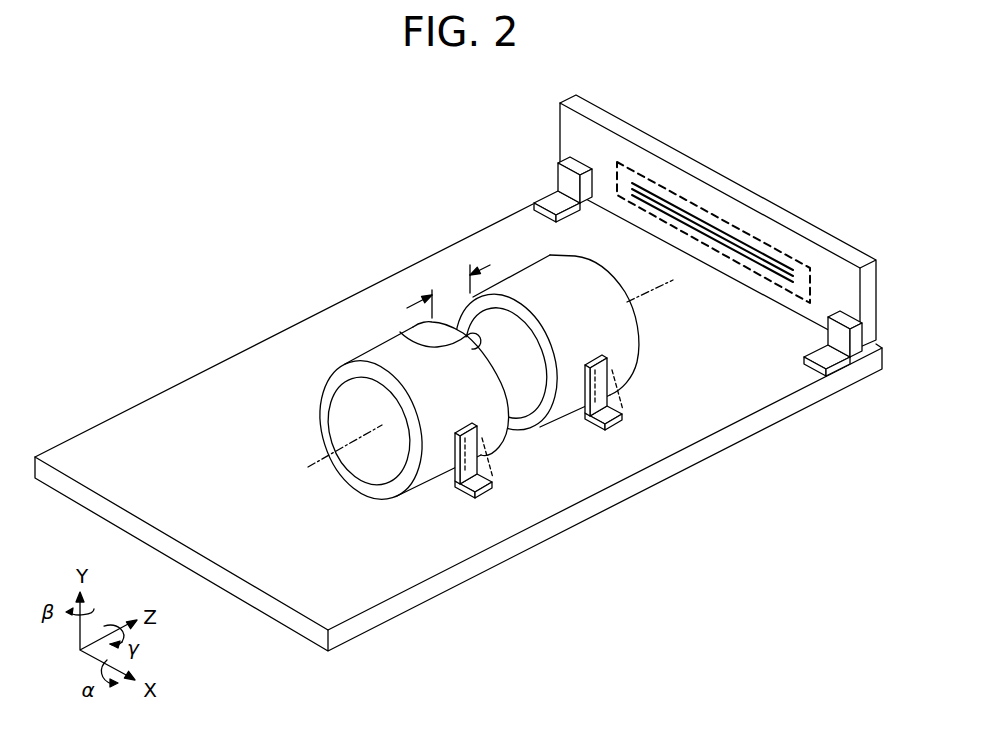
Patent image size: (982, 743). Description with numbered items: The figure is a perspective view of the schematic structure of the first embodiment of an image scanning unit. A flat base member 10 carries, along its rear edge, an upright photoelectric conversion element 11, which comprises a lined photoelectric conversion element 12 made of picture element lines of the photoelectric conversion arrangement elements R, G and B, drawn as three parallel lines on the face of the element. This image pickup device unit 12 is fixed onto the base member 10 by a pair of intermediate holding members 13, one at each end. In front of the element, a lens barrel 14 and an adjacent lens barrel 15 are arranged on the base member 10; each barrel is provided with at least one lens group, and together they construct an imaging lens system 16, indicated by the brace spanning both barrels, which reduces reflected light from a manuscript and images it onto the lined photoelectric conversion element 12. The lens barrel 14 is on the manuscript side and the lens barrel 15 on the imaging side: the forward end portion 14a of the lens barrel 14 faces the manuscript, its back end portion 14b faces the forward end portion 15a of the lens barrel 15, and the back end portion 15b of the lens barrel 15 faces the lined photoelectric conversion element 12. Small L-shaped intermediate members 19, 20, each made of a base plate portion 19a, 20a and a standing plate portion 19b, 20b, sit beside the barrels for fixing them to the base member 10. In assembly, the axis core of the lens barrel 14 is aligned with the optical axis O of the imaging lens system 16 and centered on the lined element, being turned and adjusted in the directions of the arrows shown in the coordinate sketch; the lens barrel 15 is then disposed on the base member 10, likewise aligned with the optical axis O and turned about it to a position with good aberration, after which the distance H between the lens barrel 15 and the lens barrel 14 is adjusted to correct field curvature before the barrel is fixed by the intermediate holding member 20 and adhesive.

The base member 10 is at (408, 573).
The photoelectric conversion element 11 is at (842, 250).
The lined photoelectric conversion element 12 is at (718, 215).
The intermediate holding member 13 is at (538, 192).
The lens barrel 14 is at (378, 389).
The forward end portion 14a is at (323, 397).
The back end portion 14b is at (388, 358).
The lens barrel 15 is at (570, 340).
The forward end portion 15a is at (538, 422).
The back end portion 15b is at (640, 327).
The imaging lens system 16 is at (462, 197).
The intermediate member 19 is at (481, 456).
The base plate portion 19a is at (455, 482).
The standing plate portion 19b is at (463, 425).
The intermediate holding member 20 is at (629, 382).
The base plate portion 20a is at (620, 397).
The standing plate portion 20b is at (597, 358).
The red picture element line R is at (650, 182).
The green picture element line G is at (755, 243).
The blue picture element line B is at (728, 253).
The distance H is at (448, 289).
The optical axis O is at (308, 468).